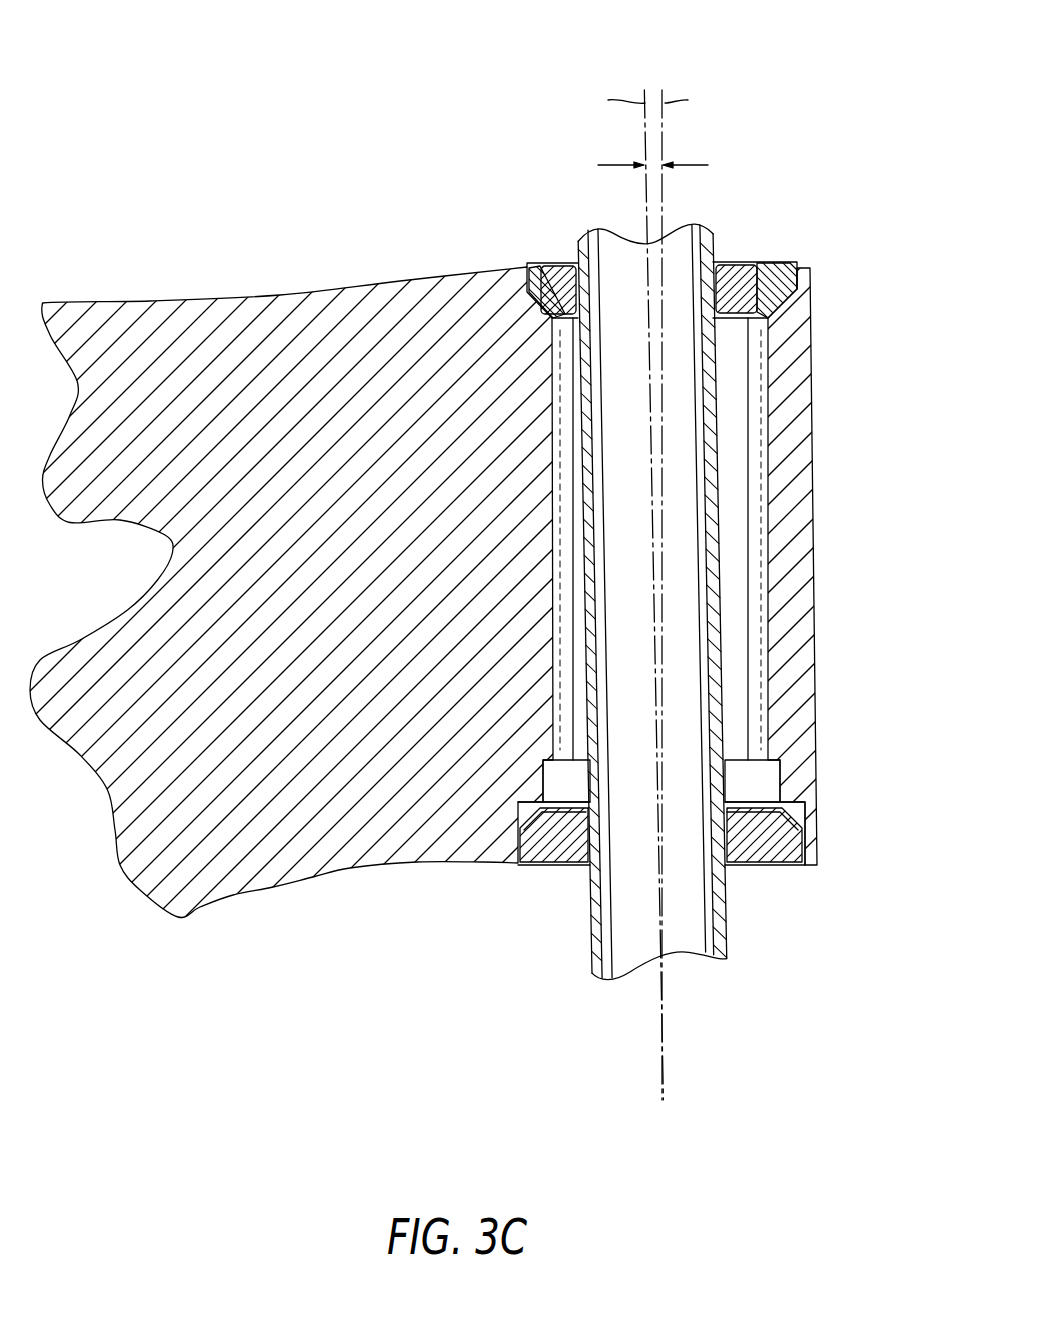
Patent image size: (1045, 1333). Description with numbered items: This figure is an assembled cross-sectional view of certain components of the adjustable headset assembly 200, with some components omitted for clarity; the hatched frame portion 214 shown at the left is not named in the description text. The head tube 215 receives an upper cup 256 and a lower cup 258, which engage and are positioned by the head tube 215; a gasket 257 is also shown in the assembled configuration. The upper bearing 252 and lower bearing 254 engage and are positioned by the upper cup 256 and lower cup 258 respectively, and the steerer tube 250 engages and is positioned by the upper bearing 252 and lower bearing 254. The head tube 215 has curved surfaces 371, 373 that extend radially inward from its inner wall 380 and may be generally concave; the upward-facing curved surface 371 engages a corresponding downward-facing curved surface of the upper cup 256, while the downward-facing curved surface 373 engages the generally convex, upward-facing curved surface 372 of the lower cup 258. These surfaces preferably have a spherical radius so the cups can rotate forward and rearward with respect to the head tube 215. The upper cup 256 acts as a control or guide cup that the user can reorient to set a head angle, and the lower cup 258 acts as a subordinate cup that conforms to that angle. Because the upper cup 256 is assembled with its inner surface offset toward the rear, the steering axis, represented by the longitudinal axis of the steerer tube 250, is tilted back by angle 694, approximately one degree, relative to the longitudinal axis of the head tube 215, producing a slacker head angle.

The adjustable headset assembly 200 is at (798, 86).
The first housing portion 214 is at (235, 300).
The head tube 215 is at (815, 552).
The steerer tube 250 is at (722, 462).
The upper bearing 252 is at (735, 278).
The lower bearing 254 is at (760, 866).
The upper cup 256 is at (768, 282).
The gasket 257 is at (526, 268).
The lower cup 258 is at (803, 820).
The curved surface of head tube 371 is at (548, 316).
The curved surface of lower cup 372 is at (542, 864).
The curved surface of head tube 373 is at (520, 811).
The inner wall of head tube 380 is at (812, 292).
The angle 694 is at (625, 163).